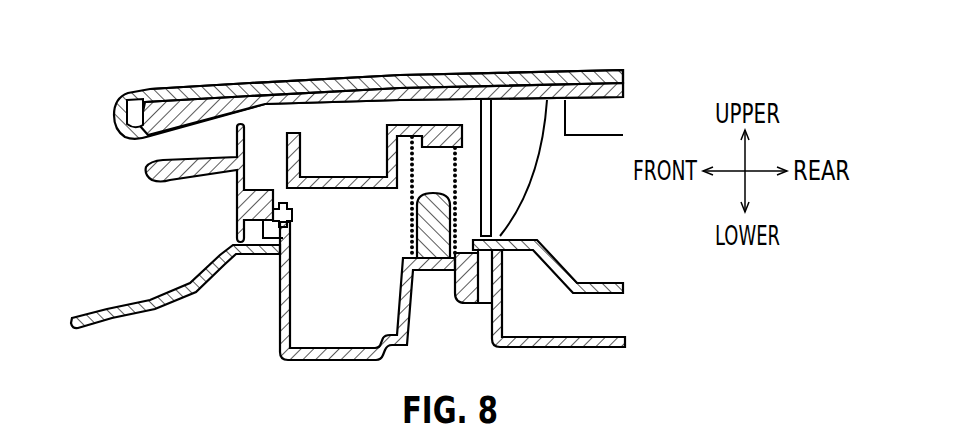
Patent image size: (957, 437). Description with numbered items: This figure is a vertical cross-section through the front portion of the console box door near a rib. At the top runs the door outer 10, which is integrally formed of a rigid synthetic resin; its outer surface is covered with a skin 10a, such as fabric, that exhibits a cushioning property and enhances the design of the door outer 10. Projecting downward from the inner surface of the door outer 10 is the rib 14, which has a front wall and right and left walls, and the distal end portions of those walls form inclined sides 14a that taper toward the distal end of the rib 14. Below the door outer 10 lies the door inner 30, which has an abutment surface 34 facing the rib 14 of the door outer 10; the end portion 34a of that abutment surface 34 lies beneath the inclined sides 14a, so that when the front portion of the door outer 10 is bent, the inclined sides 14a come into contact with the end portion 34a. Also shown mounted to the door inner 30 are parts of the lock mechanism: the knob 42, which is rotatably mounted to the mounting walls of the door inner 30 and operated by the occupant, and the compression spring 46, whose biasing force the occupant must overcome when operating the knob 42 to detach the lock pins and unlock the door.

The door outer 10 is at (377, 69).
The skin 10a is at (448, 80).
The rib 14 is at (515, 135).
The inclined sides 14a is at (520, 195).
The door inner 30 is at (150, 300).
The abutment surface 34 is at (506, 234).
The end portion of the abutment surface 34a is at (470, 304).
The knob 42 is at (197, 173).
The compression spring 46 is at (410, 207).